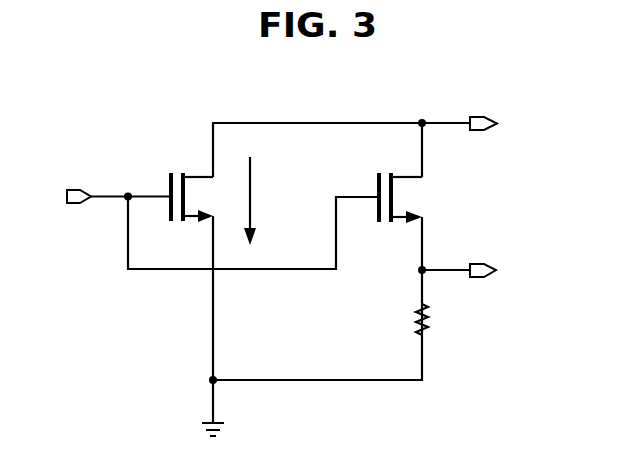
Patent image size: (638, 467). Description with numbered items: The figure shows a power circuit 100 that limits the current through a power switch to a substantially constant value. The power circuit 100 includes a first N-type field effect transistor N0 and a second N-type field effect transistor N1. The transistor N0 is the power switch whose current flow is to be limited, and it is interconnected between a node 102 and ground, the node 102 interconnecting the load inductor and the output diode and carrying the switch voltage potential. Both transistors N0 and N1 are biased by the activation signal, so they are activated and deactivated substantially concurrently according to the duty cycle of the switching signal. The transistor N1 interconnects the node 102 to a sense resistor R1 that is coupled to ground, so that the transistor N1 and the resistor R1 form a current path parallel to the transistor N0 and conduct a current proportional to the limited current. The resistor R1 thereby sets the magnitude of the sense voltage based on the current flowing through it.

The power circuit 100 is at (309, 223).
The node 102 is at (480, 78).
The first N-type field effect transistor N0 is at (204, 197).
The second N-type field effect transistor N1 is at (412, 198).
The sense resistor R1 is at (442, 327).